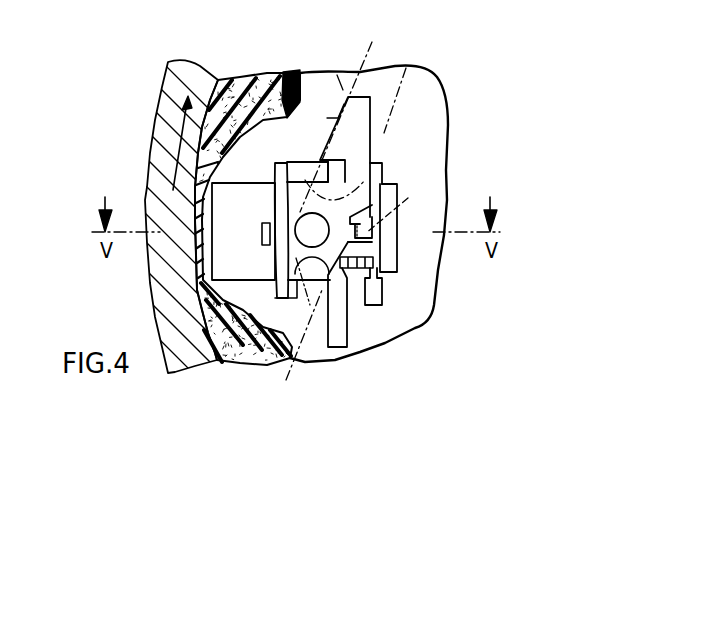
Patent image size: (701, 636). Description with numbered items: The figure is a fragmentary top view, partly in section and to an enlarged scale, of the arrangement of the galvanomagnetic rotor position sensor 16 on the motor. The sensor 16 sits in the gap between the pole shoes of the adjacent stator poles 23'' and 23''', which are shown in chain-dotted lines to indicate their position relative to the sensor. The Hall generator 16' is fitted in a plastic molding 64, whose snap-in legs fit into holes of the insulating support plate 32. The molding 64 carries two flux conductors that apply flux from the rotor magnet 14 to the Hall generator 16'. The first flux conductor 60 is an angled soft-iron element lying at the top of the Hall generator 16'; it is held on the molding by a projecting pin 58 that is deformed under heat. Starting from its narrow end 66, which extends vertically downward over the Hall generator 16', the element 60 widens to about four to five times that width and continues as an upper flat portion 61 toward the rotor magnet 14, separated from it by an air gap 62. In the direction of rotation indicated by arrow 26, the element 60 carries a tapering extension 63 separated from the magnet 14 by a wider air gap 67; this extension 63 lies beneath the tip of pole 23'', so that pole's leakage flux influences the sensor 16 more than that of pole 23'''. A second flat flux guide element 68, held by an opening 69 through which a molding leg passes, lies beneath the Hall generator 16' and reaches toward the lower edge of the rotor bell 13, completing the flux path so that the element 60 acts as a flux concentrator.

The rotor bell 13 is at (162, 145).
The rotor magnet 14 is at (247, 78).
The rotor position sensor 16 is at (400, 150).
The Hall generator 16' is at (395, 202).
The stator pole 23'' is at (353, 115).
The stator pole 23''' is at (295, 333).
The arrow 26 is at (183, 99).
The insulating support plate 32 is at (406, 304).
The projecting pin 58 is at (322, 243).
The first flux conductor 60 is at (352, 156).
The upper flat portion 61 is at (330, 280).
The air gap 62 is at (287, 161).
The tapering extension 63 is at (357, 100).
The plastic molding 64 is at (392, 237).
The narrow end 66 is at (384, 248).
The air gap 67 is at (315, 88).
The second flux guide element 68 is at (250, 192).
The opening 69 is at (262, 233).